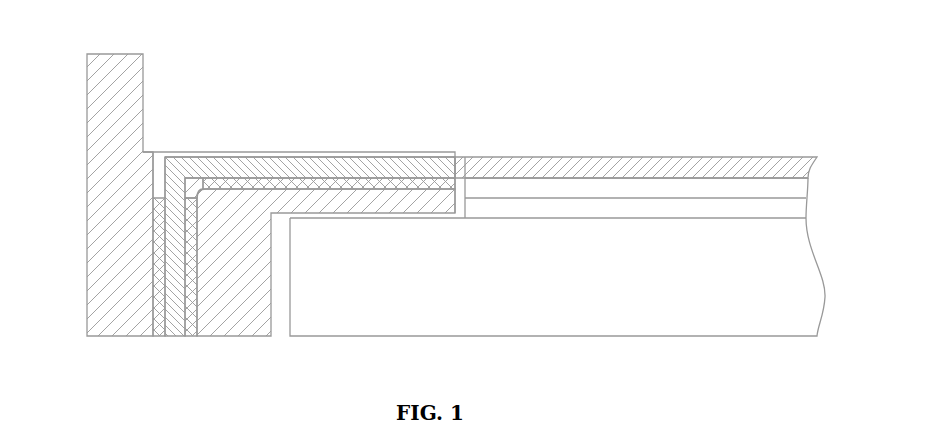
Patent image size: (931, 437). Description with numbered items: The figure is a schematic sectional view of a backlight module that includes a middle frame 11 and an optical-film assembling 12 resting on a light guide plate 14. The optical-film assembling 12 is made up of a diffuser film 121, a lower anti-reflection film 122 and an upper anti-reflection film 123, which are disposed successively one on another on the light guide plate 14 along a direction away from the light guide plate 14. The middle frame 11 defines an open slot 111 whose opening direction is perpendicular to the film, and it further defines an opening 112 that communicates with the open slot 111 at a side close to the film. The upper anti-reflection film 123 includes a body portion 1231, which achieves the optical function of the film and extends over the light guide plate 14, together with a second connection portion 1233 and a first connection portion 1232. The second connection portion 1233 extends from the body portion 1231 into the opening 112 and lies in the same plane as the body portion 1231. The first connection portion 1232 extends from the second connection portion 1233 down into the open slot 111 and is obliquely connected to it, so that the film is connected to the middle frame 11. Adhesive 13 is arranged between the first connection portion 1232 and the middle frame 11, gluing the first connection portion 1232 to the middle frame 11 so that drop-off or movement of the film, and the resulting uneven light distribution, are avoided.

The middle frame 11 is at (125, 113).
The open slot 111 is at (161, 194).
The opening 112 is at (199, 157).
The optical-film assembling 12 is at (737, 70).
The diffuser film 121 is at (735, 208).
The lower anti-reflection film 122 is at (583, 190).
The upper anti-reflection film 123 is at (242, 108).
The body portion 1231 is at (490, 172).
The first connection portion 1232 is at (176, 222).
The second connection portion 1233 is at (350, 157).
The adhesive 13 is at (160, 323).
The light guide plate 14 is at (597, 326).